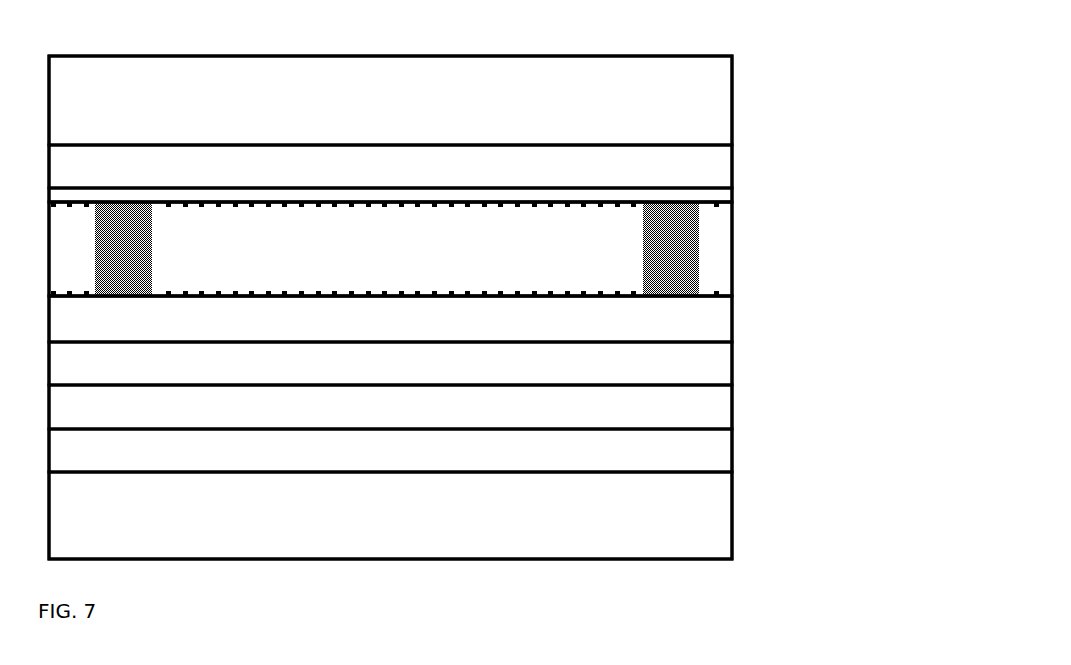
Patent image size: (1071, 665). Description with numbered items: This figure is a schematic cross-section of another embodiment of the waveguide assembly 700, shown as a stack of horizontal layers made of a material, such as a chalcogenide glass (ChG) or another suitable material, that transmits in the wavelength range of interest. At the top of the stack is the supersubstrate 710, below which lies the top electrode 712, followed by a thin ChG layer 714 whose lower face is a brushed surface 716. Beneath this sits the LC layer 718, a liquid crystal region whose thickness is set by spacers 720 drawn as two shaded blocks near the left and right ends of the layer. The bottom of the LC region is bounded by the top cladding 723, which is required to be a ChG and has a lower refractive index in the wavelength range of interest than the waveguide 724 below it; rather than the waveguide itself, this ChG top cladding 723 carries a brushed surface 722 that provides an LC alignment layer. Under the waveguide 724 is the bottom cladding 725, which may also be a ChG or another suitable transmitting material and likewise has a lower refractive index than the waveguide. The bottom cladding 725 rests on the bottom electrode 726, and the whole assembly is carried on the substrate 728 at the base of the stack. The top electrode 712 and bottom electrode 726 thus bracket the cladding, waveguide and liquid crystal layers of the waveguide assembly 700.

The waveguide assembly 700 is at (486, 47).
The supersubstrate 710 is at (732, 98).
The top electrode 712 is at (732, 165).
The thin ChG layer 714 is at (732, 190).
The brushed surface 716 is at (732, 207).
The LC layer 718 is at (730, 233).
The spacers 720 is at (143, 265).
The brushed surface 722 is at (732, 296).
The top cladding 723 is at (732, 318).
The waveguide 724 is at (732, 365).
The bottom cladding 725 is at (732, 409).
The bottom electrode 726 is at (732, 452).
The substrate 728 is at (732, 512).